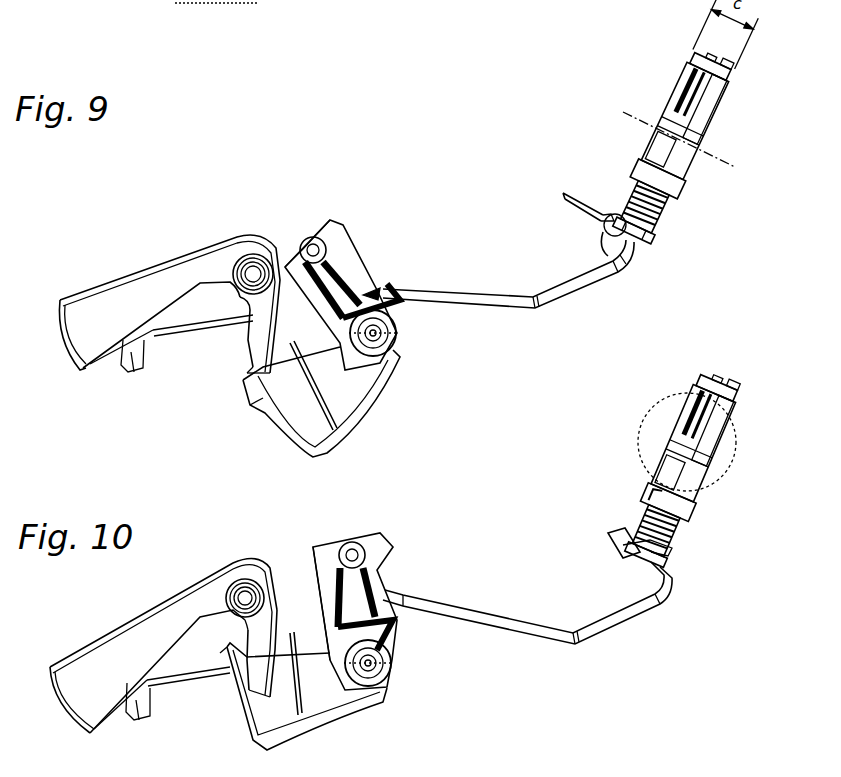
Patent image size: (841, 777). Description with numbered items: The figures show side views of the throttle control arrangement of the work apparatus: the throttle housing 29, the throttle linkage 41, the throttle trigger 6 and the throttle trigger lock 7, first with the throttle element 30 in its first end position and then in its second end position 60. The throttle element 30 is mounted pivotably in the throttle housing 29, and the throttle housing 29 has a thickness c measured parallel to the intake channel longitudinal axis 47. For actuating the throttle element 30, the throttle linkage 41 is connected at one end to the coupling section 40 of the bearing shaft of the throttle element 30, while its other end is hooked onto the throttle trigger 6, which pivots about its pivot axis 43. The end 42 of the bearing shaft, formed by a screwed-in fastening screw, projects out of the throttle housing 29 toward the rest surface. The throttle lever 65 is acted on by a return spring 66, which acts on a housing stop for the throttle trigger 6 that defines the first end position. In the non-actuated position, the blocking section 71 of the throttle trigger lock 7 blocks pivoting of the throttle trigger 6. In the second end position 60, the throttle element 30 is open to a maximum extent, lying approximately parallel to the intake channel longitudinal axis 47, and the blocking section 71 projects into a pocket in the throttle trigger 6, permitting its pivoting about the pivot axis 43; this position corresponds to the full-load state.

In FIG. 9, the throttle trigger lock 7 is at (132, 287).
In FIG. 10, the throttle trigger lock 7 is at (122, 647).
In FIG. 9, the blocking section 71 is at (248, 365).
In FIG. 10, the blocking section 71 is at (267, 680).
In FIG. 9, the throttle trigger 6 is at (345, 420).
In FIG. 10, the throttle trigger 6 is at (335, 717).
In FIG. 9, the pivot axis 43 is at (397, 363).
In FIG. 10, the pivot axis 43 is at (388, 697).
In FIG. 9, the throttle linkage 41 is at (475, 293).
In FIG. 10, the throttle linkage 41 is at (527, 630).
In FIG. 9, the throttle housing 29 is at (672, 123).
In FIG. 10, the throttle element 30 is at (660, 415).
In FIG. 9, the return spring 66 is at (622, 198).
In FIG. 10, the return spring 66 is at (632, 508).
In FIG. 9, the coupling section 40 is at (652, 221).
In FIG. 9, the end 42 is at (637, 243).
In FIG. 9, the throttle lever 65 is at (570, 192).
In FIG. 10, the throttle lever 65 is at (612, 532).
In FIG. 9, the intake channel longitudinal axis 47 is at (718, 156).
In FIG. 10, the second end position 60 is at (714, 484).